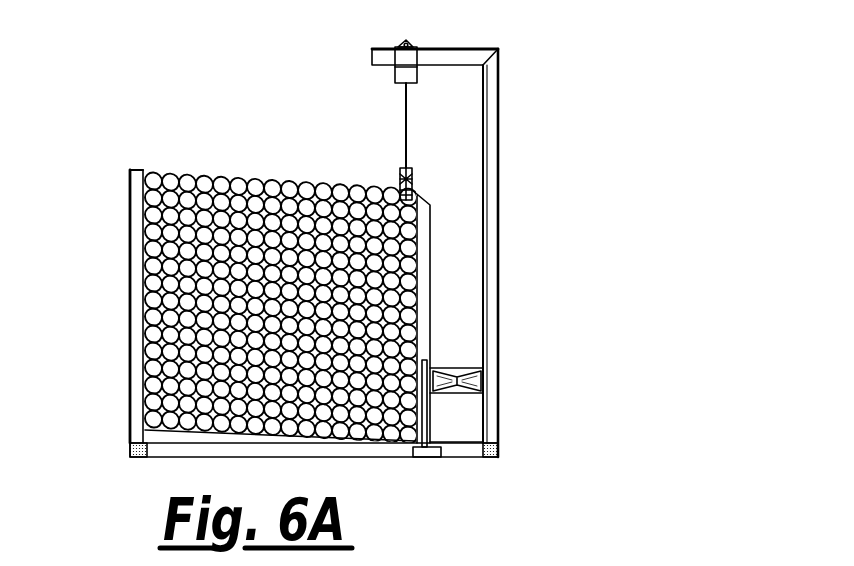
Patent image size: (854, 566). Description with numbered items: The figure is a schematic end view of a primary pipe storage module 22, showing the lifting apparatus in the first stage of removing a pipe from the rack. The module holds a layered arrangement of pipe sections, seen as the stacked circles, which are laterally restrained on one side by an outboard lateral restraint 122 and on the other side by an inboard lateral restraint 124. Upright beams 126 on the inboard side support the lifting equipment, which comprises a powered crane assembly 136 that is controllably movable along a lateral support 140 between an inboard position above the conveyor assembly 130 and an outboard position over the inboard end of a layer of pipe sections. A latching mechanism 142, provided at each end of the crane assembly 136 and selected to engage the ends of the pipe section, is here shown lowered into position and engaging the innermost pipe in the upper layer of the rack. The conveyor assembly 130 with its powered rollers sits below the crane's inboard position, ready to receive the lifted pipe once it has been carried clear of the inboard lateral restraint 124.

The primary pipe storage module 22 is at (200, 112).
The outboard lateral restraint 122 is at (131, 275).
The inboard lateral restraint 124 is at (427, 315).
The upright beam 126 is at (492, 247).
The conveyor assembly 130 is at (451, 428).
The powered crane assembly 136 is at (403, 122).
The lateral support 140 is at (463, 53).
The latching mechanism 142 is at (415, 185).